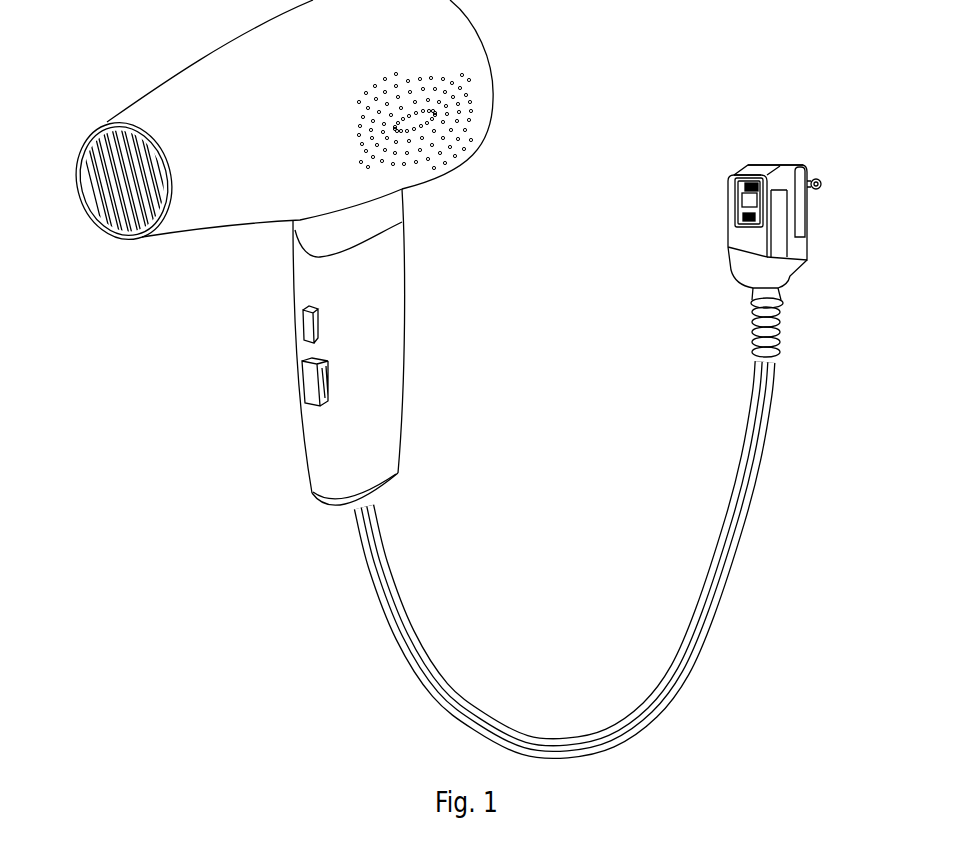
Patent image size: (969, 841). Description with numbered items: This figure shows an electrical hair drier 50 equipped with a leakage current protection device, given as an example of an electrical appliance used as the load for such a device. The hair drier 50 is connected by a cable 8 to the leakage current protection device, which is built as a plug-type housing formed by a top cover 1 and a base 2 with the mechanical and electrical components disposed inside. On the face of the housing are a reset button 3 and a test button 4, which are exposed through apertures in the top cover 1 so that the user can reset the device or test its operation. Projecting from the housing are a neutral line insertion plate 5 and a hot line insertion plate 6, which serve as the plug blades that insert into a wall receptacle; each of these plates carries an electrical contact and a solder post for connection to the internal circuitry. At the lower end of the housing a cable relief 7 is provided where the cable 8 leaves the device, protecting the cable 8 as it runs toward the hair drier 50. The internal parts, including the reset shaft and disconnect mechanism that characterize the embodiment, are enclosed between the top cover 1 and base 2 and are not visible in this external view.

The top cover 1 is at (736, 173).
The base 2 is at (763, 165).
The reset button 3 is at (728, 200).
The test button 4 is at (731, 222).
The neutral line insertion plate 5 is at (798, 166).
The hot line insertion plate 6 is at (820, 178).
The cable relief 7 is at (752, 325).
The cable 8 is at (757, 457).
The electrical hair drier 50 is at (387, 365).